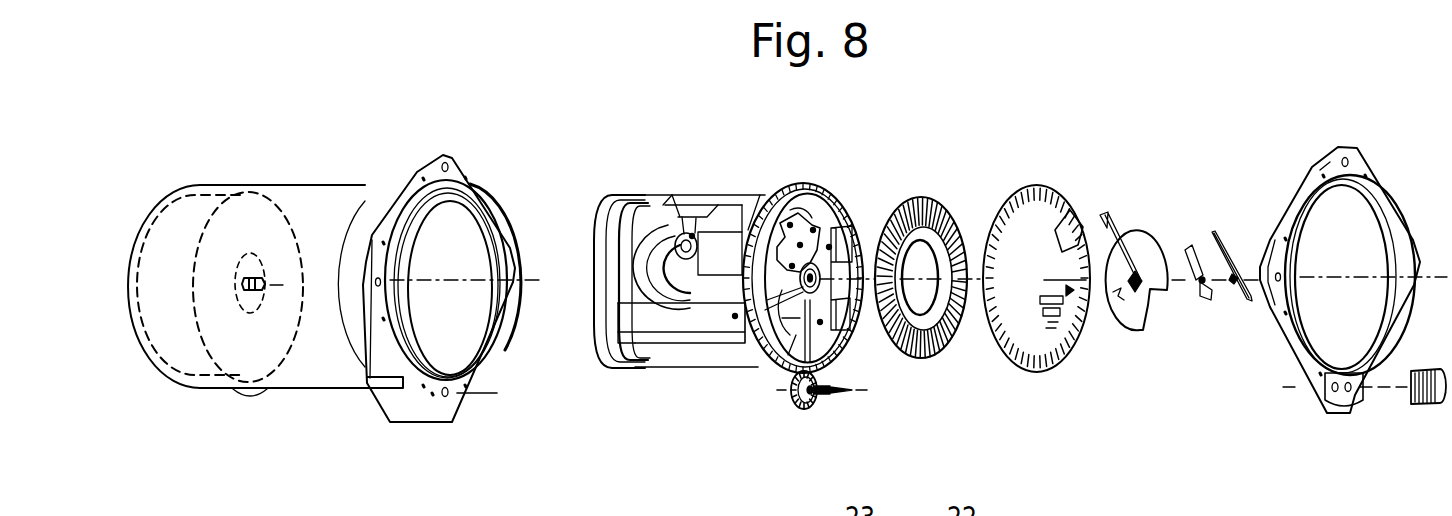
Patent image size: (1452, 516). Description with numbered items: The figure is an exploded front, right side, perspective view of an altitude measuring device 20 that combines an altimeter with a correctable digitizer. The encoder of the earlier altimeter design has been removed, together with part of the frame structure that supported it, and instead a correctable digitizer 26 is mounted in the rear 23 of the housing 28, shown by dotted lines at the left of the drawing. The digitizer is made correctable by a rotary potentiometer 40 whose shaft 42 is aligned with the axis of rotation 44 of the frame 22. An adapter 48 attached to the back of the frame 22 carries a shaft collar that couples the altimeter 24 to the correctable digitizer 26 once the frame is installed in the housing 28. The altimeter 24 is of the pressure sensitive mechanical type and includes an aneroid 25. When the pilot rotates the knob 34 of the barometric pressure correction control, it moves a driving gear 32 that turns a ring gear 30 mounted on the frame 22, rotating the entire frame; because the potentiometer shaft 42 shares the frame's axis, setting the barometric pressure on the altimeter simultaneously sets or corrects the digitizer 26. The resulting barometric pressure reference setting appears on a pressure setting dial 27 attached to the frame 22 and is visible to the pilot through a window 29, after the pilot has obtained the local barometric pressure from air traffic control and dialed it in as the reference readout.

The altitude measuring device 20 is at (675, 133).
The frame 22 is at (755, 197).
The rear 23 is at (176, 185).
The altimeter 24 is at (687, 222).
The aneroid 25 is at (673, 232).
The correctable digitizer 26 is at (213, 210).
The pressure setting dial 27 is at (910, 200).
The housing 28 is at (356, 185).
The window 29 is at (1073, 220).
The ring gear 30 is at (836, 363).
The driving gear 32 is at (806, 409).
The knob 34 is at (1435, 407).
The rotary potentiometer 40 is at (252, 286).
The shaft 42 is at (255, 292).
The axis of rotation 44 is at (527, 285).
The adapter 48 is at (645, 368).